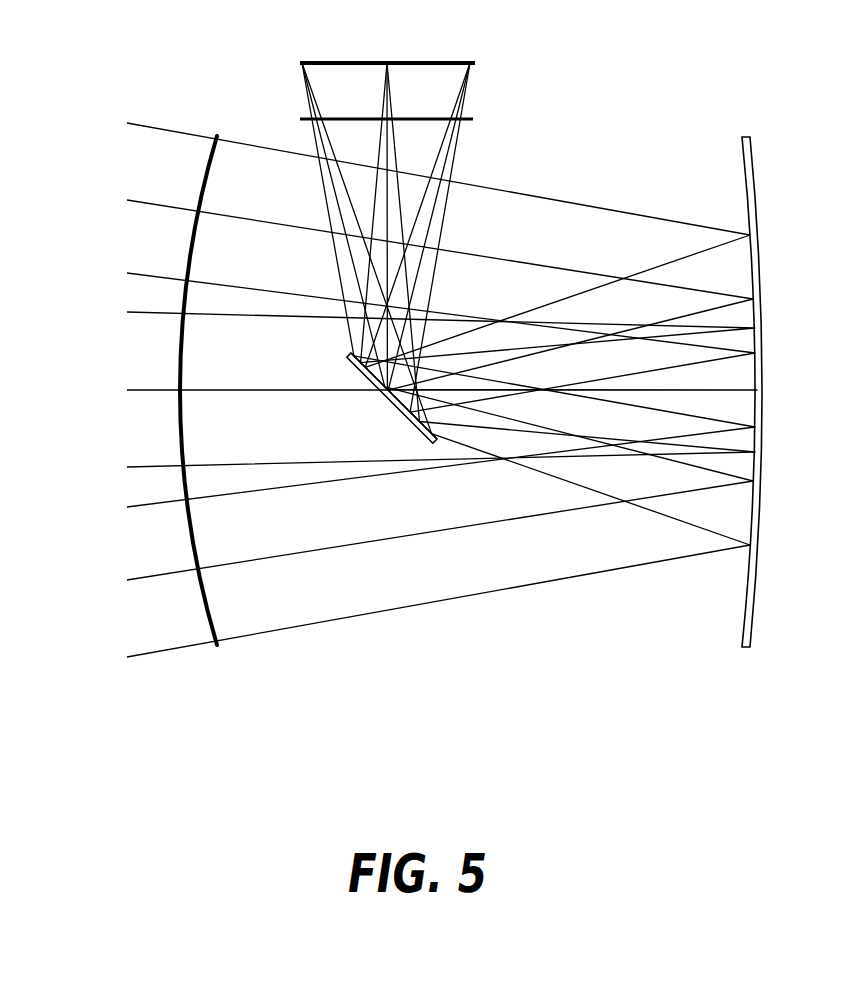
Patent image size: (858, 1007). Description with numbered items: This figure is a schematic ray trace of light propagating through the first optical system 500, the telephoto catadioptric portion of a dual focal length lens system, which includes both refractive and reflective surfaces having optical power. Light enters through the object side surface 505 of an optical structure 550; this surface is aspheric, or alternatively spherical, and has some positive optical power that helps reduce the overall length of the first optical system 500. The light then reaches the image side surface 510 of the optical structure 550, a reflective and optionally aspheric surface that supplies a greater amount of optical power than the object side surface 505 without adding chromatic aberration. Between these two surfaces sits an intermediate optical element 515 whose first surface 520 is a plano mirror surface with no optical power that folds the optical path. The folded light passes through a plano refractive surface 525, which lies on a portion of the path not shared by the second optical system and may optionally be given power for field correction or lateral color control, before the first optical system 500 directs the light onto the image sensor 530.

The first optical system 500 is at (172, 68).
The object side surface 505 is at (181, 367).
The image side surface 510 is at (750, 162).
The intermediate optical element 515 is at (404, 408).
The first surface 520 is at (389, 394).
The refractive surface 525 is at (463, 121).
The image sensor 530 is at (452, 62).
The optical structure 550 is at (672, 645).